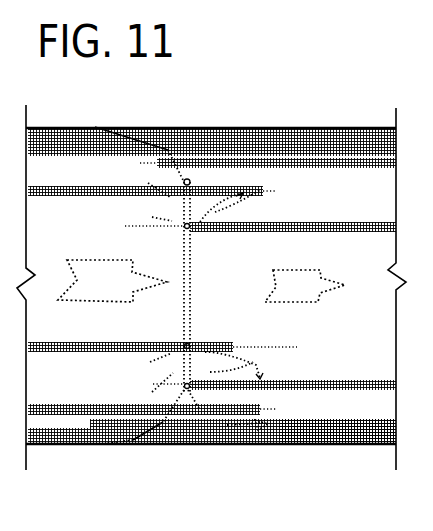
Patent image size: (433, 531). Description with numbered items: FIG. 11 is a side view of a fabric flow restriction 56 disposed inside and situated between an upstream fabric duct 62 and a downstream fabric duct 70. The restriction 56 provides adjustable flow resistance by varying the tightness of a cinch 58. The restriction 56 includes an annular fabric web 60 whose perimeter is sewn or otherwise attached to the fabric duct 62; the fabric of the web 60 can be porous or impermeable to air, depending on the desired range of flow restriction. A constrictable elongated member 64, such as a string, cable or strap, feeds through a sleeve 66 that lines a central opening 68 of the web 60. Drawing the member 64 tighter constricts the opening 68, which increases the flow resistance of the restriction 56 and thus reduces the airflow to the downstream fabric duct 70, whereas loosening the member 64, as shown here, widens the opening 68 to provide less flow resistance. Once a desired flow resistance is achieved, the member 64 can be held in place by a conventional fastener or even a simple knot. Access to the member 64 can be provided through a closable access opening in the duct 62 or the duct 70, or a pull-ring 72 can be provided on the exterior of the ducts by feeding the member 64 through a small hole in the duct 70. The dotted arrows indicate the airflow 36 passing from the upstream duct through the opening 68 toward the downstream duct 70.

The air flow 36 is at (100, 266).
The flow restriction 56 is at (203, 110).
The cinch 58 is at (190, 183).
The annular fabric web 60 is at (168, 150).
The fabric duct 62 is at (57, 445).
The constrictable elongated member 64 is at (200, 412).
The sleeve 66 is at (183, 320).
The central opening 68 is at (207, 282).
The downstream fabric duct 70 is at (333, 448).
The pull-ring 72 is at (263, 432).